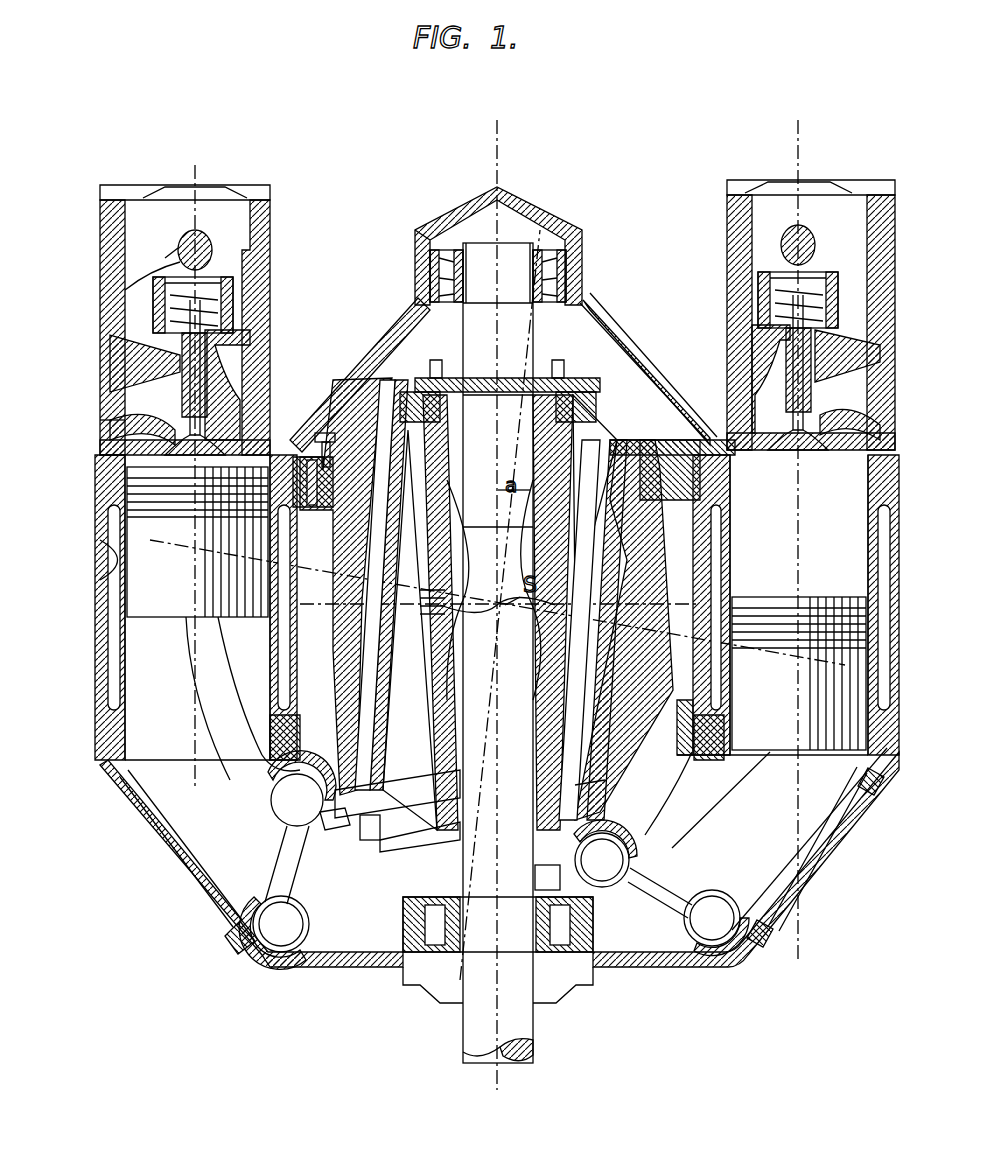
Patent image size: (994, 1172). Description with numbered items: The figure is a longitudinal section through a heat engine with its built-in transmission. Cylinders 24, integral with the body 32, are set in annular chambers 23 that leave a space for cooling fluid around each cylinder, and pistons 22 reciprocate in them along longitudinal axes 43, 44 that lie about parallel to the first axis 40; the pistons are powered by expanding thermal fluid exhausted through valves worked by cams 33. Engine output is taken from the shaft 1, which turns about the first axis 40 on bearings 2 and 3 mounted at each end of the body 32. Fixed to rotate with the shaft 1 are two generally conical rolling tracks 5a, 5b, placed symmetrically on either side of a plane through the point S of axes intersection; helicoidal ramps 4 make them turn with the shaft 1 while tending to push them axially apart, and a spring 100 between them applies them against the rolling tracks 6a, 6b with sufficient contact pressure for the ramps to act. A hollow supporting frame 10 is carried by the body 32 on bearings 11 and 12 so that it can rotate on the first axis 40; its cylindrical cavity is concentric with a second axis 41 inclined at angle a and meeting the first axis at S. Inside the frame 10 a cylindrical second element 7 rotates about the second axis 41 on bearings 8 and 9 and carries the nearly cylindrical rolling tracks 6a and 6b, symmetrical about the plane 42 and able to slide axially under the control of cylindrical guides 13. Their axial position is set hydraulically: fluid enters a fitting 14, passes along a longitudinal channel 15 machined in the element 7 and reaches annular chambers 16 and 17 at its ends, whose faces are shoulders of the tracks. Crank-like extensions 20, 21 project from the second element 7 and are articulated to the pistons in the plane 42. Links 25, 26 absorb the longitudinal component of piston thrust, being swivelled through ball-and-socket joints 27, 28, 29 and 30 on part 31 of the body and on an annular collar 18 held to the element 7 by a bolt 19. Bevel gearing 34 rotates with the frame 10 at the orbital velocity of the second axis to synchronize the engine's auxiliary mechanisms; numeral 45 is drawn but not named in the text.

The shaft 1 is at (513, 250).
The bearing 2 is at (548, 253).
The bearing 3 is at (430, 960).
The helicoidal ramps 4 is at (520, 560).
The rolling track 5a is at (640, 430).
The rolling track 5b is at (440, 745).
The rolling track 6a is at (414, 360).
The rolling track 6b is at (383, 795).
The second element 7 is at (368, 430).
The bearing 8 is at (400, 420).
The bearing 9 is at (272, 760).
The supporting frame 10 is at (318, 436).
The bearing 11 is at (690, 450).
The bearing 12 is at (268, 737).
The cylindrical guides 13 is at (395, 575).
The fitting 14 is at (540, 876).
The longitudinal channel 15 is at (600, 815).
The annular chamber 16 is at (592, 800).
The annular chamber 17 is at (620, 480).
The annular collar 18 is at (362, 835).
The bolt 19 is at (333, 825).
The crank-like extension 20 is at (210, 728).
The crank-like extension 21 is at (735, 792).
The piston 22 is at (125, 605).
The annular chamber 23 is at (100, 500).
The cylinder 24 is at (115, 560).
The link 25 is at (283, 858).
The link 26 is at (665, 945).
The ball-and-socket joint 27 is at (283, 808).
The ball-and-socket joint 28 is at (598, 878).
The ball-and-socket joint 29 is at (275, 940).
The ball-and-socket joint 30 is at (730, 945).
The part of the body 31 is at (760, 935).
The body 32 is at (430, 235).
The cam 33 is at (182, 257).
The bevel gearing 34 is at (444, 372).
The first axis 40 is at (490, 233).
The second axis 41 is at (555, 330).
The radial plane 42 is at (228, 562).
The longitudinal axis 43 is at (100, 430).
The longitudinal axis 44 is at (780, 205).
The spherical joint 45 is at (500, 630).
The spring 100 is at (400, 620).